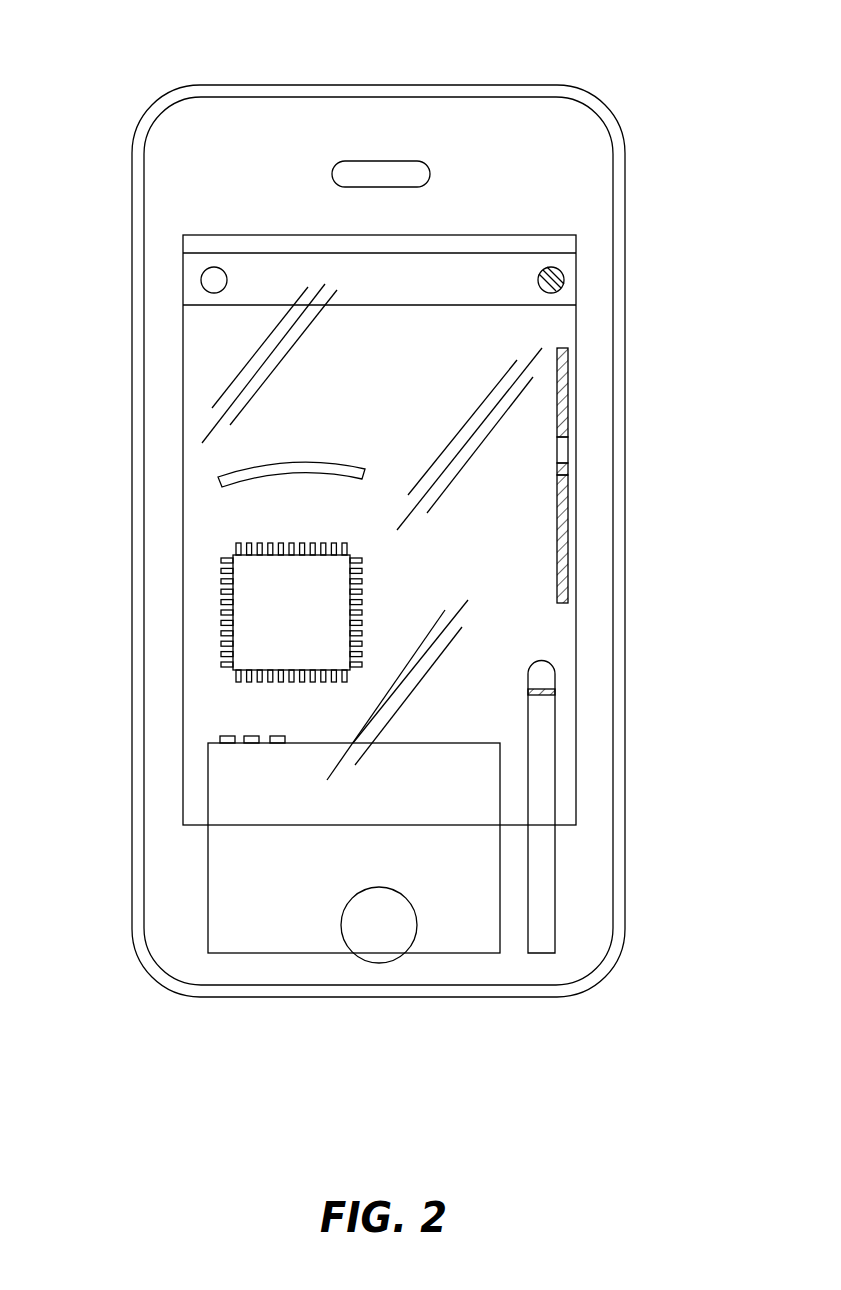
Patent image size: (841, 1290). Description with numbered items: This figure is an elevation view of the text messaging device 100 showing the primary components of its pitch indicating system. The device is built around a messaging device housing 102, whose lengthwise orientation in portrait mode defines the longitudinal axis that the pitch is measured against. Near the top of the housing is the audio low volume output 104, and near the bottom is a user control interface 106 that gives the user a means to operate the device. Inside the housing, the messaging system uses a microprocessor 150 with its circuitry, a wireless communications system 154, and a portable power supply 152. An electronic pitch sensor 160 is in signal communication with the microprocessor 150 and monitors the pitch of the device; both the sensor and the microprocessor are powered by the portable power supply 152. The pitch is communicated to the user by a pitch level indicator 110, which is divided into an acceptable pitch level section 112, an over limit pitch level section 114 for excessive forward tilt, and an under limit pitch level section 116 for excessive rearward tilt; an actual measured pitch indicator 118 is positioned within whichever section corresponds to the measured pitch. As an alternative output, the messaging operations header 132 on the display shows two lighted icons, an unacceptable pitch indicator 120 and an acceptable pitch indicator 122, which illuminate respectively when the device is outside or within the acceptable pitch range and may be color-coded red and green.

The text messaging device 100 is at (134, 86).
The messaging device housing 102 is at (625, 525).
The audio low volume output 104 is at (380, 161).
The user control interface 106 is at (402, 955).
The pitch level indicator 110 is at (588, 475).
The acceptable pitch level section 112 is at (557, 449).
The over limit pitch level section 114 is at (557, 392).
The under limit pitch level section 116 is at (557, 545).
The actual measured pitch indicator 118 is at (557, 469).
The unacceptable pitch indicator 120 is at (202, 272).
The acceptable pitch indicator 122 is at (561, 270).
The messaging operations header 132 is at (577, 282).
The microprocessor 150 is at (222, 613).
The portable power supply 152 is at (208, 863).
The wireless communications system 154 is at (555, 863).
The electronic pitch sensor 160 is at (218, 482).